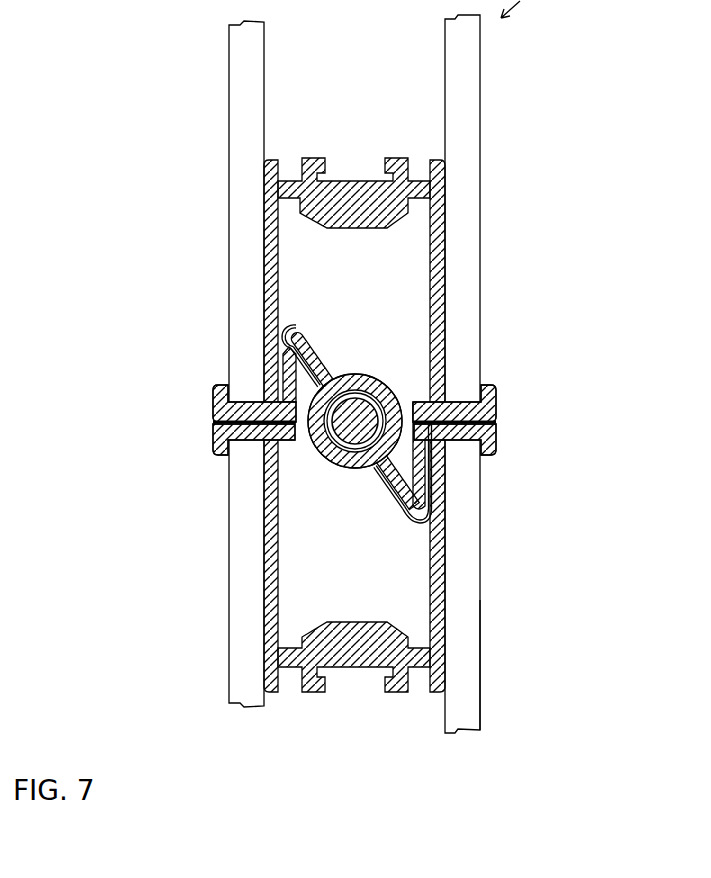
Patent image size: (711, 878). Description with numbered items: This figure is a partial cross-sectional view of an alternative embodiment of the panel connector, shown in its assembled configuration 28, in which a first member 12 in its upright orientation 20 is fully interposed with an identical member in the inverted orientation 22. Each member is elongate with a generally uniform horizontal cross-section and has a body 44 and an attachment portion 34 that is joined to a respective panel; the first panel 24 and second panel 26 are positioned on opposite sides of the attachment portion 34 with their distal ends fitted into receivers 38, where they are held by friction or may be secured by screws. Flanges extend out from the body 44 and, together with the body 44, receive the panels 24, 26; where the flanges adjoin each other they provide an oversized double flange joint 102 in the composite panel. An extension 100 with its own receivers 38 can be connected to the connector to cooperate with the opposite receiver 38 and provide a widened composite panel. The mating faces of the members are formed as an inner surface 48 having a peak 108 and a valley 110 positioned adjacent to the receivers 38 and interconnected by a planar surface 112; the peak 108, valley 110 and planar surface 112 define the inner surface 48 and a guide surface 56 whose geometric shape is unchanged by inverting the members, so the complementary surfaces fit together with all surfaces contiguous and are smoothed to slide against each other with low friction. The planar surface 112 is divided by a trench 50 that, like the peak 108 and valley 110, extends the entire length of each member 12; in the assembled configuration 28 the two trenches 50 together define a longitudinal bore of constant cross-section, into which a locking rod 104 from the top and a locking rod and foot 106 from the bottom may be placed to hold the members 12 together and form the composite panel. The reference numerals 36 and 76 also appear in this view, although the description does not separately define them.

The first member 12 is at (366, 420).
The upright orientation 20 is at (505, 208).
The inverted orientation 22 is at (445, 662).
The first panel 24 is at (228, 207).
The second panel 26 is at (482, 703).
The assembled configuration 28 is at (482, 58).
The attachment portion 34 is at (308, 158).
The pane surface 36 is at (346, 208).
The receiver 38 is at (225, 448).
The body 44 is at (366, 426).
The inner surface 48 is at (361, 384).
The trench 50 is at (380, 403).
The guide surface 56 is at (405, 515).
The retaining clip 76 is at (498, 415).
The extension 100 is at (357, 384).
The double flange joint 102 is at (356, 465).
The locking rod 104 is at (355, 400).
The locking rod and foot 106 is at (263, 613).
The peak 108 is at (359, 434).
The valley 110 is at (357, 444).
The planar surface 112 is at (312, 337).